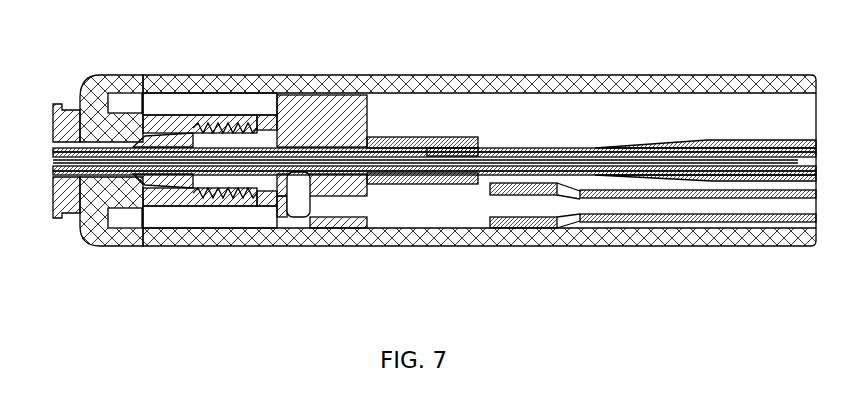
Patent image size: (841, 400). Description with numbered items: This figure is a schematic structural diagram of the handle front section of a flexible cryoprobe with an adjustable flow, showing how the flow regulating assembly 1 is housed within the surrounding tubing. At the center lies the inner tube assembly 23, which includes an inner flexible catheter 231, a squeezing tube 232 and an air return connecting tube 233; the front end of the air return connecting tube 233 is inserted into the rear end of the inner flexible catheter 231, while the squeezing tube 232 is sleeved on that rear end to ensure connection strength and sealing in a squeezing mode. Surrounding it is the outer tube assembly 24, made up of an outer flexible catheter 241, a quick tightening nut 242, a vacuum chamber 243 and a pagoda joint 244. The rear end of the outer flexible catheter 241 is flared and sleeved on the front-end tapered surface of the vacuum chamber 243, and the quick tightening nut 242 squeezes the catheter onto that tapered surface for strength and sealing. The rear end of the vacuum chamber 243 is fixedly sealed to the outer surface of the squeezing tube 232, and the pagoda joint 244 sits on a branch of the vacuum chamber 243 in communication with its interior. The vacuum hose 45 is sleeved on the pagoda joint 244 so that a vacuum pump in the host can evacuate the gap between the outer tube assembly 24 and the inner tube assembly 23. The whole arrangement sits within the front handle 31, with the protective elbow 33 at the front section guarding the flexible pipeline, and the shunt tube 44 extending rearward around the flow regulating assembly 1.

The flow regulating assembly 1 is at (610, 148).
The inner tube assembly 23 is at (53, 176).
The outer tube assembly 24 is at (53, 143).
The front handle 31 is at (318, 247).
The protective elbow 33 is at (120, 215).
The shunt tube 44 is at (737, 140).
The vacuum hose 45 is at (627, 205).
The inner flexible catheter 231 is at (270, 80).
The squeezing tube 232 is at (377, 140).
The air return connecting tube 233 is at (440, 140).
The outer flexible catheter 241 is at (127, 77).
The quick tightening nut 242 is at (177, 127).
The vacuum chamber 243 is at (327, 95).
The pagoda joint 244 is at (532, 247).